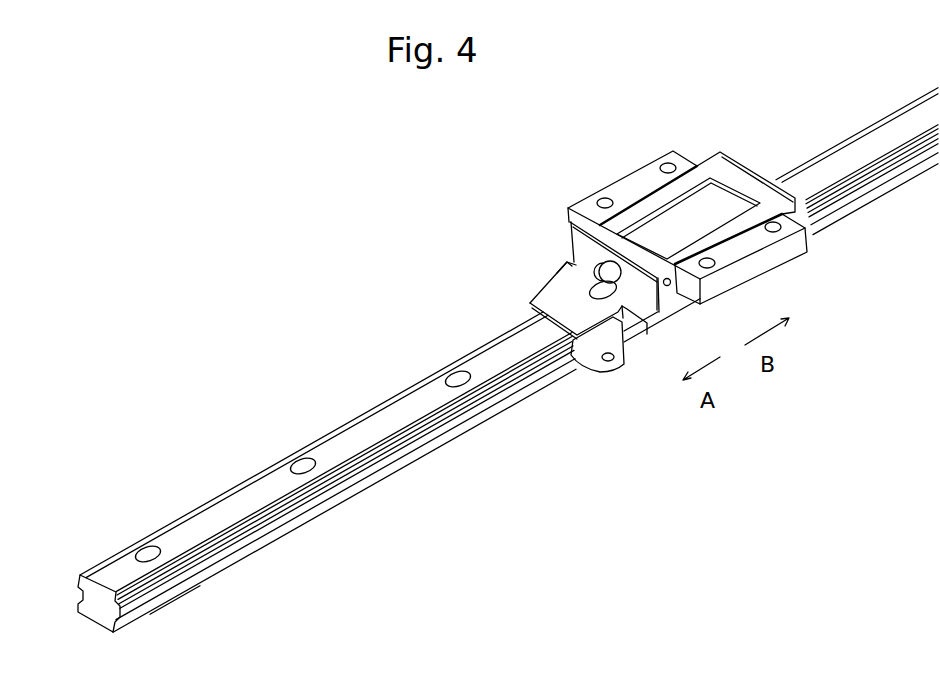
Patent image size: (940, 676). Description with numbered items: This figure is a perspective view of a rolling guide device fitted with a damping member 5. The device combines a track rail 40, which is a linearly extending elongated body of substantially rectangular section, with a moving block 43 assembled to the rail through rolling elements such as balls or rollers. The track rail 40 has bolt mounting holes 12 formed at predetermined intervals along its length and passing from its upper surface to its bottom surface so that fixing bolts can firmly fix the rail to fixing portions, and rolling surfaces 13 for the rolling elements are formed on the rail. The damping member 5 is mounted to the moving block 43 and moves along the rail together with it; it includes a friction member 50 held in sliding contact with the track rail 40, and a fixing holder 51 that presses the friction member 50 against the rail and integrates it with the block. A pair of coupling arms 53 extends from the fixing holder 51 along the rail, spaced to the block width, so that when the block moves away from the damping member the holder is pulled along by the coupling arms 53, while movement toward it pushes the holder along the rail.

The damping member 5 is at (497, 307).
The bolt mounting hole 12 is at (145, 547).
The rolling surface 13 is at (254, 515).
The track rail 40 is at (361, 498).
The moving block 43 is at (716, 206).
The friction member 50 is at (637, 354).
The fixing holder 51 is at (539, 284).
The coupling arm 53 is at (812, 257).